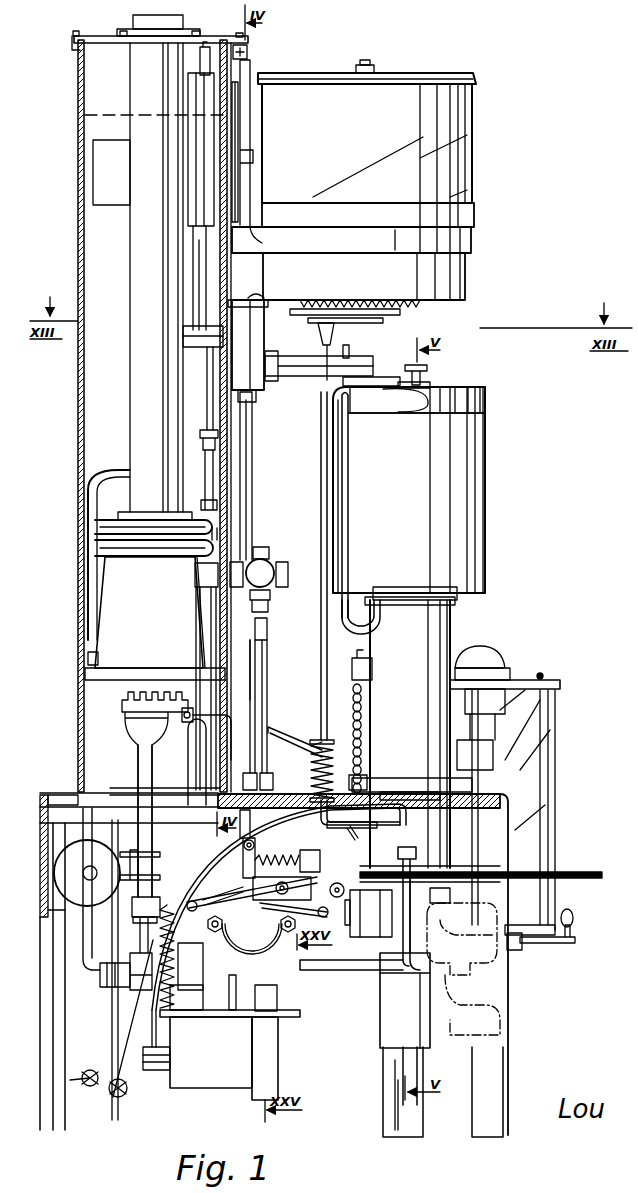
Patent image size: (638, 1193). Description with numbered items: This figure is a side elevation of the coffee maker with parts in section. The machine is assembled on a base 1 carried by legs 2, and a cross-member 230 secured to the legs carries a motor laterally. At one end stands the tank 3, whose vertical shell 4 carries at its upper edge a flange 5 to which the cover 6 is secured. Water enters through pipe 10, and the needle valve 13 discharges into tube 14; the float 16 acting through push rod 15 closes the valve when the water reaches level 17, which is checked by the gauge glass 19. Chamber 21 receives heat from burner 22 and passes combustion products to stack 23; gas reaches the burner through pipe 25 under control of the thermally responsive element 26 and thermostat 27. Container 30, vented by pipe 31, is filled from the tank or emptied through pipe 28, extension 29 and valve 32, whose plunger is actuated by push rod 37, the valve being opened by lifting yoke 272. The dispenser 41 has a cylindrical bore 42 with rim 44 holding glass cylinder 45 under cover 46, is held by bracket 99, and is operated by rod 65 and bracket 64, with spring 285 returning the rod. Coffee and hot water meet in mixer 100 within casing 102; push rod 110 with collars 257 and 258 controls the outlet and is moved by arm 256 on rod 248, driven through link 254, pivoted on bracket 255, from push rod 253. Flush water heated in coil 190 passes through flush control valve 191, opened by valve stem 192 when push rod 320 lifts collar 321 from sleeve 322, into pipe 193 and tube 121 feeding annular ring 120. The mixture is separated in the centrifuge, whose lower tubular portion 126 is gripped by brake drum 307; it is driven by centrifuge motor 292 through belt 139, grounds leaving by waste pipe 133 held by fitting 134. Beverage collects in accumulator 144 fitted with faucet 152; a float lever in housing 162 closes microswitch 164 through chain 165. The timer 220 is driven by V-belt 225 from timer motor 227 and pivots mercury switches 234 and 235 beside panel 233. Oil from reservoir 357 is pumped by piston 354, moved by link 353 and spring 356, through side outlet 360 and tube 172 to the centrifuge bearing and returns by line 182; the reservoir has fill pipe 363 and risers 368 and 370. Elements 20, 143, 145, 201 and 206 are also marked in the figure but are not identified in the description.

The base 1 is at (494, 808).
The legs 2 is at (52, 1127).
The tank 3 is at (110, 277).
The vertical shell 4 is at (77, 428).
The flange 5 is at (77, 42).
The cover 6 is at (100, 36).
The water inlet pipe 10 is at (200, 638).
The needle valve 13 is at (203, 438).
The cold water admission tube 14 is at (115, 472).
The push rod 15 is at (206, 395).
The float 16 is at (187, 213).
The predetermined water level 17 is at (114, 118).
The water level gauge glass 19 is at (251, 70).
The tube fitting 20 is at (238, 52).
The chamber 21 is at (147, 597).
The burner 22 is at (122, 700).
The stack 23 is at (140, 293).
The gas pipe 25 is at (142, 960).
The thermally responsive element 26 is at (98, 658).
The thermostat 27 is at (107, 990).
The pipe 28 is at (200, 303).
The valve extension 29 is at (185, 333).
The container 30 is at (122, 205).
The vent pipe 31 is at (207, 60).
The valve 32 is at (300, 435).
The push rod 37 is at (253, 420).
The dispenser 41 is at (376, 189).
The cylindrical bore 42 is at (467, 281).
The rim 44 is at (475, 215).
The glass cylinder 45 is at (470, 131).
The removable cover 46 is at (437, 76).
The bracket 64 is at (318, 330).
The rod 65 is at (320, 417).
The bracket 99 is at (472, 240).
The mixer 100 is at (468, 482).
The casing 102 is at (482, 442).
The push rod 110 is at (425, 415).
The annular ring 120 is at (485, 405).
The tube 121 is at (348, 478).
The lower tubular portion of centrifuge 126 is at (420, 928).
The waste pipe 133 is at (396, 1080).
The fitting 134 is at (392, 1023).
The V-belt 139 is at (500, 877).
The cylinder 143 is at (451, 622).
The accumulator 144 is at (558, 756).
The cap 145 is at (478, 650).
The faucet 152 is at (574, 932).
The housing 162 is at (372, 653).
The microswitch 164 is at (343, 835).
The chain 165 is at (362, 752).
The force-feed lubrication line 172 is at (394, 820).
The oil return line 182 is at (372, 977).
The coil 190 is at (153, 557).
The flush control valve 191 is at (273, 553).
The valve stem 192 is at (265, 620).
The pipe 193 is at (320, 561).
The bracket 201 is at (233, 213).
The bracket 206 is at (485, 678).
The timer 220 is at (314, 1010).
The V-belt 225 is at (128, 852).
The timer motor 227 is at (86, 873).
The cross-member 230 is at (40, 822).
The vertical panel 233 is at (112, 1010).
The mercury switch 234 is at (127, 1077).
The mercury switch 235 is at (100, 1067).
The rod 248 is at (352, 343).
The push rod 253 is at (185, 723).
The link 254 is at (312, 721).
The bracket 255 is at (270, 705).
The arm 256 is at (388, 385).
The collar 257 is at (428, 363).
The collar 258 is at (431, 381).
The yoke 272 is at (252, 477).
The spring 285 is at (316, 771).
The centrifuge motor 292 is at (488, 1034).
The brake drum 307 is at (361, 924).
The push rod 320 is at (260, 843).
The collar 321 is at (268, 635).
The sleeve 322 is at (268, 673).
The link 353 is at (198, 923).
The oil pump piston 354 is at (203, 955).
The spring 356 is at (163, 997).
The oil reservoir 357 is at (243, 1088).
The side outlet 360 is at (170, 1057).
The fill pipe 363 is at (238, 1011).
The riser 368 is at (200, 1011).
The riser 370 is at (300, 1017).